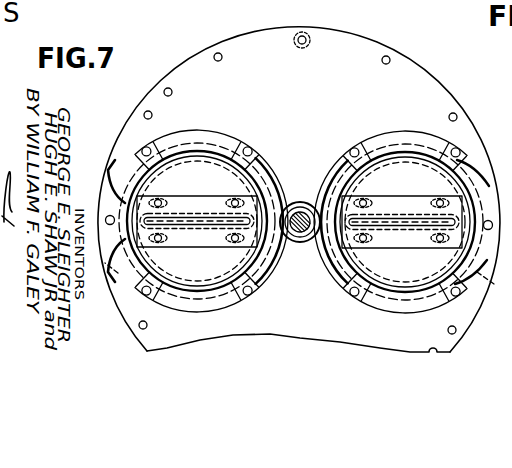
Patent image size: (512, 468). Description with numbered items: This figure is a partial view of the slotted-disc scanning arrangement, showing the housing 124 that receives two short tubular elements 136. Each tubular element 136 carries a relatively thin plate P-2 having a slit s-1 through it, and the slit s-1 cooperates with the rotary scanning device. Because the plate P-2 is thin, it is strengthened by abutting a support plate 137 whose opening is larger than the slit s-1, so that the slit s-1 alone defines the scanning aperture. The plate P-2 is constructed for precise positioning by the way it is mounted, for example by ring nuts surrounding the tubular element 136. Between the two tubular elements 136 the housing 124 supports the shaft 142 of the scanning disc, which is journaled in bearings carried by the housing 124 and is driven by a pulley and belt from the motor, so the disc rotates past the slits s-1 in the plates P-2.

The housing 124 is at (316, 177).
The short tubular element 136 is at (343, 158).
The support plate 137 is at (198, 212).
The shaft 142 is at (298, 232).
The slit s-1 is at (401, 224).
The plate P-2 is at (395, 237).